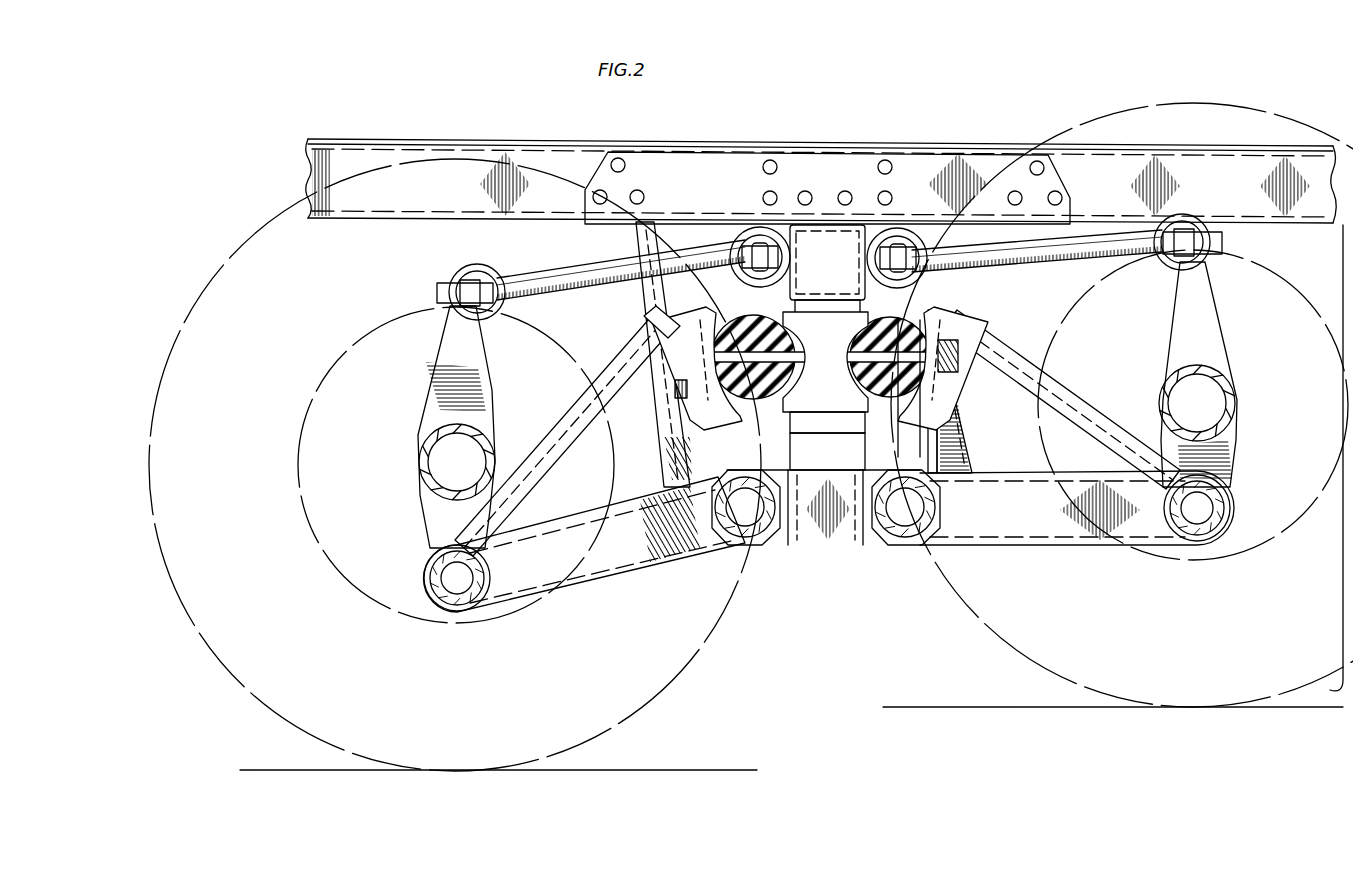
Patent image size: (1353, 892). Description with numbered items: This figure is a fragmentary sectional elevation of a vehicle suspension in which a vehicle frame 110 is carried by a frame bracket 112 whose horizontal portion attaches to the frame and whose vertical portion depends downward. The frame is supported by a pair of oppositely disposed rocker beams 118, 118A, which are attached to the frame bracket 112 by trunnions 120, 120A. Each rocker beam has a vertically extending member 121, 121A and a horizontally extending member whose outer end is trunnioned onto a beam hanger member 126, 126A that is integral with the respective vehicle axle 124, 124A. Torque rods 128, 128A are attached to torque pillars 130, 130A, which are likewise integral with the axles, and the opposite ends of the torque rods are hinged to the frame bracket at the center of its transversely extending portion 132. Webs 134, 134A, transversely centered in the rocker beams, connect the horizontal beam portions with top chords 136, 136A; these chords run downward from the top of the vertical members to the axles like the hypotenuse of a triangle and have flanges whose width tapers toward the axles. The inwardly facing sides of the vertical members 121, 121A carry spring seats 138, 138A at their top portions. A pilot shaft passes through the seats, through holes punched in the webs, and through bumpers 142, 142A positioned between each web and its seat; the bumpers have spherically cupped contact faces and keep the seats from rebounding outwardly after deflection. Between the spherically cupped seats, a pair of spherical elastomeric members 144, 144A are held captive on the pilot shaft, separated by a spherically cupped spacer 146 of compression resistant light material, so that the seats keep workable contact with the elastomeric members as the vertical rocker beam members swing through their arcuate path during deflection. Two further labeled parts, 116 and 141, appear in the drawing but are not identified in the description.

The vehicle frame 110 is at (552, 150).
The frame bracket 112 is at (870, 150).
The center bolster block 116 is at (852, 466).
The rocker beam 118 is at (683, 563).
The rocker beam 118A is at (1028, 548).
The trunnion 120 is at (752, 544).
The trunnion 120A is at (920, 544).
The vertically extending member 121 is at (690, 436).
The vertically extending member 121A is at (920, 448).
The vehicle axle 124 is at (420, 450).
The vehicle axle 124A is at (1226, 398).
The beam hanger member 126 is at (428, 525).
The beam hanger member 126A is at (1228, 468).
The torque rod 128 is at (588, 272).
The torque rod 128A is at (1092, 265).
The torque pillar 130 is at (447, 342).
The torque pillar 130A is at (1220, 342).
The transversely extending portion 132 is at (810, 268).
The web 134 is at (585, 501).
The web 134A is at (1030, 459).
The top chord 136 is at (562, 420).
The top chord 136A is at (1060, 390).
The spring seat 138 is at (690, 315).
The spring seat 138A is at (986, 306).
The spacer spool 141 is at (792, 320).
The bumper 142 is at (682, 392).
The bumper 142A is at (950, 375).
The elastomeric member 144 is at (765, 304).
The elastomeric member 144A is at (912, 318).
The spacer 146 is at (850, 434).